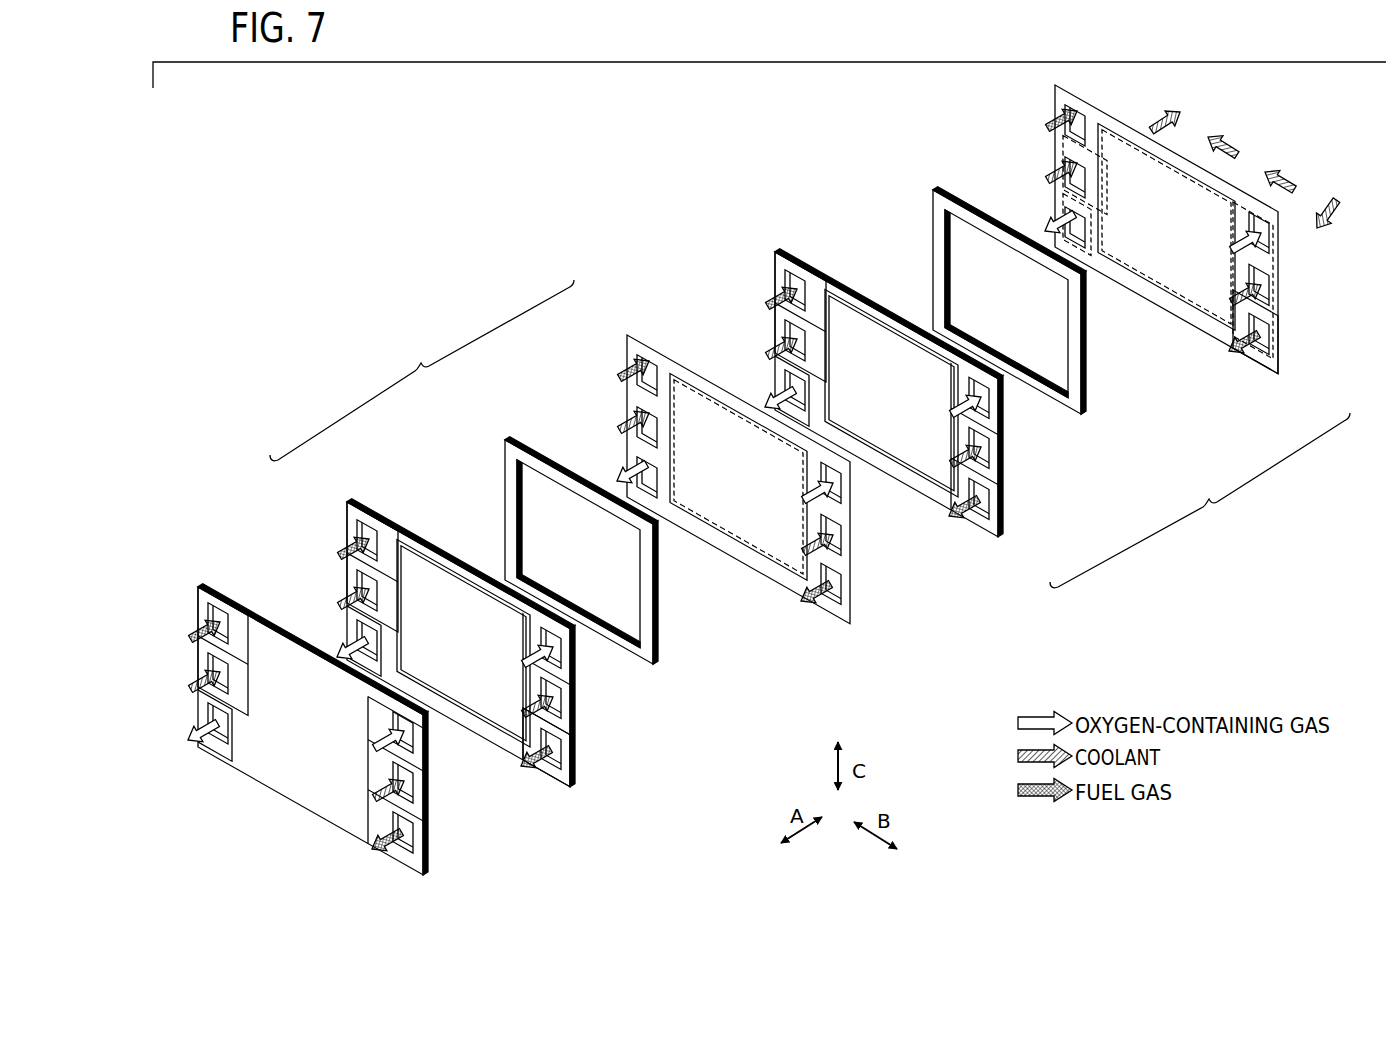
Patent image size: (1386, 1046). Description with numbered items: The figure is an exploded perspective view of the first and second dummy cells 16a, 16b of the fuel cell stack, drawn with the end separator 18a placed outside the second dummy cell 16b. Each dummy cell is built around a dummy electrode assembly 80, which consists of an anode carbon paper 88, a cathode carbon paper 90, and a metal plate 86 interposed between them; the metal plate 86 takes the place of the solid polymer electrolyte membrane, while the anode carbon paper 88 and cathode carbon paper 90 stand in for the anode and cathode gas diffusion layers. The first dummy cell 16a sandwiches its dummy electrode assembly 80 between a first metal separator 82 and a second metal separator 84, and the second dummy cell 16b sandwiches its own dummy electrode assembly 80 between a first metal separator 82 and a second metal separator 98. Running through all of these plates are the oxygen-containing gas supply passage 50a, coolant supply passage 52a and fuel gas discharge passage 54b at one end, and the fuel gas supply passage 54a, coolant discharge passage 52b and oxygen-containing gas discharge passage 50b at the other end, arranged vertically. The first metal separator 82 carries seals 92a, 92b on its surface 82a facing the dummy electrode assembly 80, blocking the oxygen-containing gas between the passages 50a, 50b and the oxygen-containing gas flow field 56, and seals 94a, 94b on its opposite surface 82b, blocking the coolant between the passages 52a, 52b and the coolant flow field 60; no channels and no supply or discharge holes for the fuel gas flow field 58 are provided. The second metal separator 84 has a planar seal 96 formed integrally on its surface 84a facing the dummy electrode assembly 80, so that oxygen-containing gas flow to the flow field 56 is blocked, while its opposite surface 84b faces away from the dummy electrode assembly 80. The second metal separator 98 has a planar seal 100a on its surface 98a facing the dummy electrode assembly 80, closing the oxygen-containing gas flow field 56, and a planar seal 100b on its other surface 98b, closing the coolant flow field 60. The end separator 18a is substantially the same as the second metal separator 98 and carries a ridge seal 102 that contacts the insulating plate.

The first dummy cell 16a is at (1200, 500).
The second dummy cell 16b is at (422, 370).
The end separator 18a is at (304, 713).
The oxygen-containing gas supply passage 50a is at (410, 750).
The oxygen-containing gas discharge passage 50b is at (205, 715).
The coolant supply passage 52a is at (410, 798).
The coolant discharge passage 52b is at (205, 665).
The fuel gas supply passage 54a is at (205, 612).
The fuel gas discharge passage 54b is at (410, 848).
The oxygen-containing gas flow field 56 is at (729, 448).
The fuel gas flow field 58 is at (468, 588).
The coolant flow field 60 is at (420, 568).
The dummy electrode assembly 80 is at (601, 564).
The first metal separator 82 is at (461, 662).
The surface of first metal separator 82a is at (581, 770).
The surface of first metal separator 82b is at (560, 745).
The second metal separator 84 is at (1192, 251).
The surface of second metal separator 84a is at (1270, 332).
The fuel gas flow field 84b is at (1290, 357).
The metal plate 86 is at (603, 566).
The anode carbon paper 88 is at (625, 643).
The cathode carbon paper 90 is at (660, 640).
The seal 92a is at (533, 640).
The seal 92b is at (355, 640).
The seal 94a is at (560, 693).
The seal 94b is at (370, 590).
The planar seal 96 is at (1182, 312).
The second metal separator 98 is at (743, 462).
The surface of second metal separator 98a is at (843, 583).
The surface of second metal separator 98b is at (848, 608).
The planar seal 100a is at (672, 375).
The planar seal 100b is at (700, 398).
The seal 102 is at (262, 624).